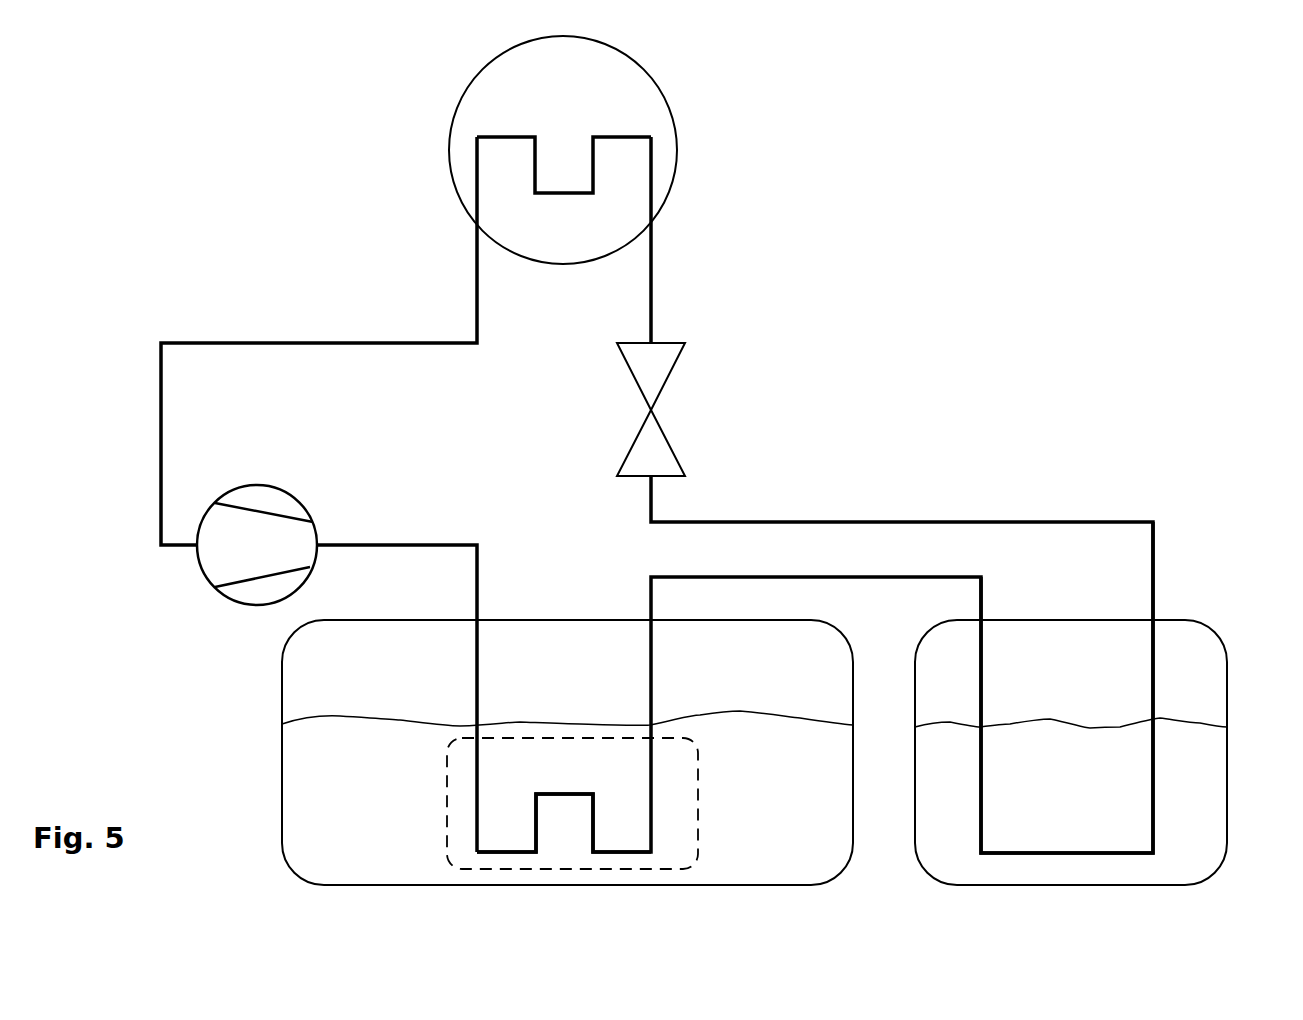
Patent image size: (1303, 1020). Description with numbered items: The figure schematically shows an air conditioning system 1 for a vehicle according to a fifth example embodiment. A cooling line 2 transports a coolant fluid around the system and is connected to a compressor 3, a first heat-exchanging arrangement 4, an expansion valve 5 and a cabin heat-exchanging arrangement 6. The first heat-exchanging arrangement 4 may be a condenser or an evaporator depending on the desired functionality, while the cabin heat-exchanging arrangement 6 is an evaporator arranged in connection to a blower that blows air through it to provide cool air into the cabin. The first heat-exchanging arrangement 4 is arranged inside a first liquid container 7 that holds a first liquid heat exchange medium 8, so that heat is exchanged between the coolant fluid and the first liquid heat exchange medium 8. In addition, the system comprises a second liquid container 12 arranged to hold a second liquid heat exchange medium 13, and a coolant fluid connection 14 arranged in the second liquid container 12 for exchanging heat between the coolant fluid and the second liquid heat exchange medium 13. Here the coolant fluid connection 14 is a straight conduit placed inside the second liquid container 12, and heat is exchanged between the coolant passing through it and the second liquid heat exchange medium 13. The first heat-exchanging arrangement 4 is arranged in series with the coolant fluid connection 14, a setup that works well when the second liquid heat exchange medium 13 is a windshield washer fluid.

The air conditioning system 1 is at (108, 254).
The cooling line 2 is at (373, 545).
The compressor 3 is at (202, 525).
The first heat-exchanging arrangement 4 is at (447, 845).
The expansion valve 5 is at (666, 342).
The cabin heat-exchanging arrangement 6 is at (677, 138).
The first liquid container 7 is at (282, 760).
The first liquid heat exchange medium 8 is at (383, 815).
The second liquid container 12 is at (1177, 620).
The second liquid heat exchange medium 13 is at (928, 778).
The coolant fluid connection 14 is at (1063, 850).